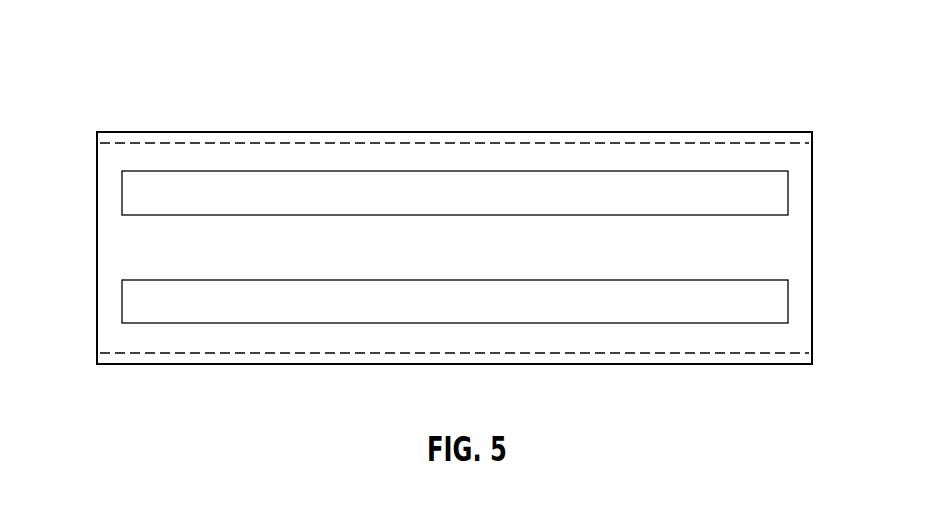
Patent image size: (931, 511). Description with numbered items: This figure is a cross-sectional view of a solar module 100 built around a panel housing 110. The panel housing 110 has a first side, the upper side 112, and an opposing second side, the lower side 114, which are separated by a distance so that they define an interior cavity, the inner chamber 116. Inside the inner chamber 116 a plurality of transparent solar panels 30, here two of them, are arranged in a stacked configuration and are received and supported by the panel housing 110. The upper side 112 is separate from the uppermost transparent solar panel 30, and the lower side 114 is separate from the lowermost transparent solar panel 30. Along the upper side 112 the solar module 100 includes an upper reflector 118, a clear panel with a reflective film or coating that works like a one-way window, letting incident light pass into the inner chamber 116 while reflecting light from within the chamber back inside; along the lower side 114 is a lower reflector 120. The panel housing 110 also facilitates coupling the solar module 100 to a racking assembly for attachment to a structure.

The solar module 100 is at (138, 73).
The panel housing 110 is at (97, 213).
The upper side 112 is at (166, 131).
The lower side 114 is at (166, 365).
The inner chamber 116 is at (124, 248).
The upper reflector 118 is at (492, 143).
The lower reflector 120 is at (693, 354).
The transparent solar panel 30 is at (788, 193).